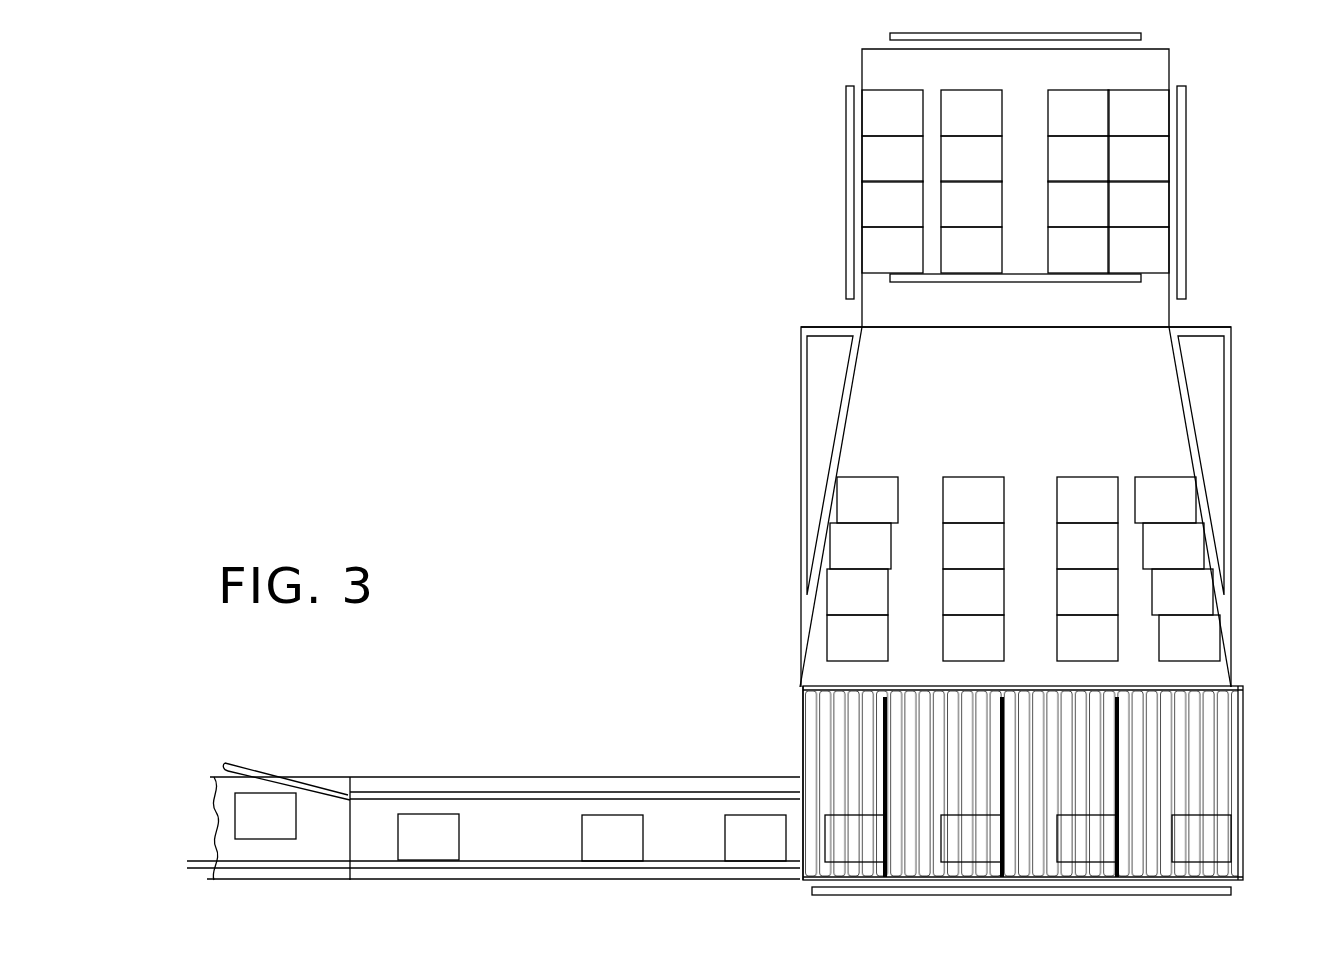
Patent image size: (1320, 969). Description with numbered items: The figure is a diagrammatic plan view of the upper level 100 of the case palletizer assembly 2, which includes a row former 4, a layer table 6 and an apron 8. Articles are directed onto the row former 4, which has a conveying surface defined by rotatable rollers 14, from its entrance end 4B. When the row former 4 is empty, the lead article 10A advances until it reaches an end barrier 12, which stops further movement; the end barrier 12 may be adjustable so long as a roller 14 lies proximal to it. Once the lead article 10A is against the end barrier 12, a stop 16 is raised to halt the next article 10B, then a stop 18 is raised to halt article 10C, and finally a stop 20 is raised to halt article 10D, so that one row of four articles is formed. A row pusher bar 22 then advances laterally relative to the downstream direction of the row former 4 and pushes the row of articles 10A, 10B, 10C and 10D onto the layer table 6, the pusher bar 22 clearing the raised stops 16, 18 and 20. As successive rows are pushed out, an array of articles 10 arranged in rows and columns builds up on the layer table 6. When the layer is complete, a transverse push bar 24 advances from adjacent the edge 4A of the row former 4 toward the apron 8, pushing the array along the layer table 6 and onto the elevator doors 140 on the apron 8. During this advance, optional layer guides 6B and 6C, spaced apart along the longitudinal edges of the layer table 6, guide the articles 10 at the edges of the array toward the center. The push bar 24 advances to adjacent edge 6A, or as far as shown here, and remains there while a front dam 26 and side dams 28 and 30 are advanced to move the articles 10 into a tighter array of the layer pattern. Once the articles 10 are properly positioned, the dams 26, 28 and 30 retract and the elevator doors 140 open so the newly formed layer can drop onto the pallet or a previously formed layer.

The case palletizer assembly 2 is at (543, 180).
The upper level 100 is at (580, 340).
The front dam 26 is at (890, 36).
The apron 8 is at (862, 70).
The elevator doors 140 is at (1023, 127).
The side dam 28 is at (846, 190).
The side dam 30 is at (1188, 188).
The transverse push bar 24 is at (1015, 283).
The layer table 6 is at (800, 442).
The edge of layer table 6A is at (1123, 327).
The layer guide 6B is at (852, 402).
The layer guide 6C is at (1180, 397).
The articles 10 is at (727, 475).
The end barrier 12 is at (1240, 747).
The stop 20 is at (885, 707).
The stop 18 is at (1000, 707).
The stop 16 is at (1117, 707).
The rollers 14 is at (938, 697).
The row pusher bar 22 is at (812, 887).
The lead article 10A is at (1177, 851).
The article 10B is at (1063, 851).
The article 10C is at (947, 851).
The article 10D is at (831, 851).
The row former 4 is at (867, 772).
The edge of row former 4A is at (818, 685).
The entrance end 4B is at (807, 737).